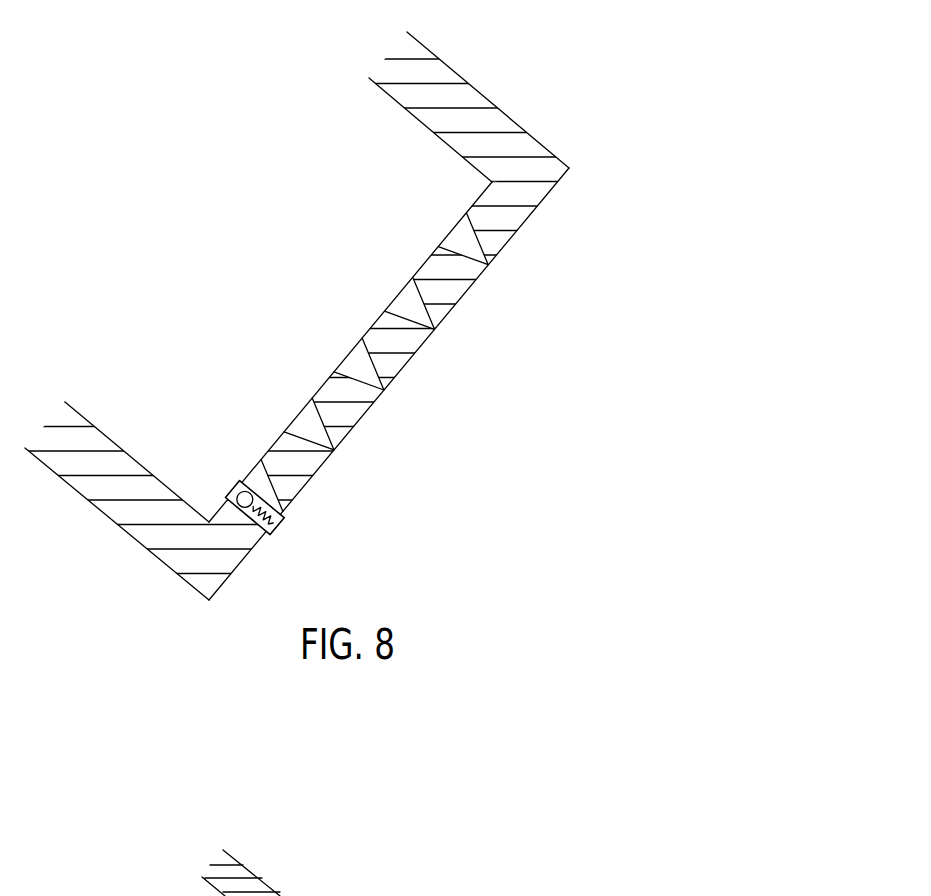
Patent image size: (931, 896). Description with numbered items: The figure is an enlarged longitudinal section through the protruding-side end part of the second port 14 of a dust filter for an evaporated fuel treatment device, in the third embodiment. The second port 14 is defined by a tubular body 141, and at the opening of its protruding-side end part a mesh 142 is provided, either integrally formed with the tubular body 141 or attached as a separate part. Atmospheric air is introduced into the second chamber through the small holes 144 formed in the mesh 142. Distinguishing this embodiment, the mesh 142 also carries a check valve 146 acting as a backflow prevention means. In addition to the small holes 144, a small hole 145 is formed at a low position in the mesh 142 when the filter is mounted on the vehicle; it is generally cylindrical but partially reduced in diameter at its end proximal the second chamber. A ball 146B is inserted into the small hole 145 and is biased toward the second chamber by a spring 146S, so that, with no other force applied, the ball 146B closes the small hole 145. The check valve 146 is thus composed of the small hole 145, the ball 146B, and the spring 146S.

The second port 14 is at (465, 304).
The tubular body 141 is at (473, 87).
The mesh 142 is at (465, 329).
The small holes 144 is at (450, 250).
The small hole 145 is at (260, 527).
The check valve 146 is at (308, 469).
The ball 146B is at (232, 494).
The spring 146S is at (263, 510).